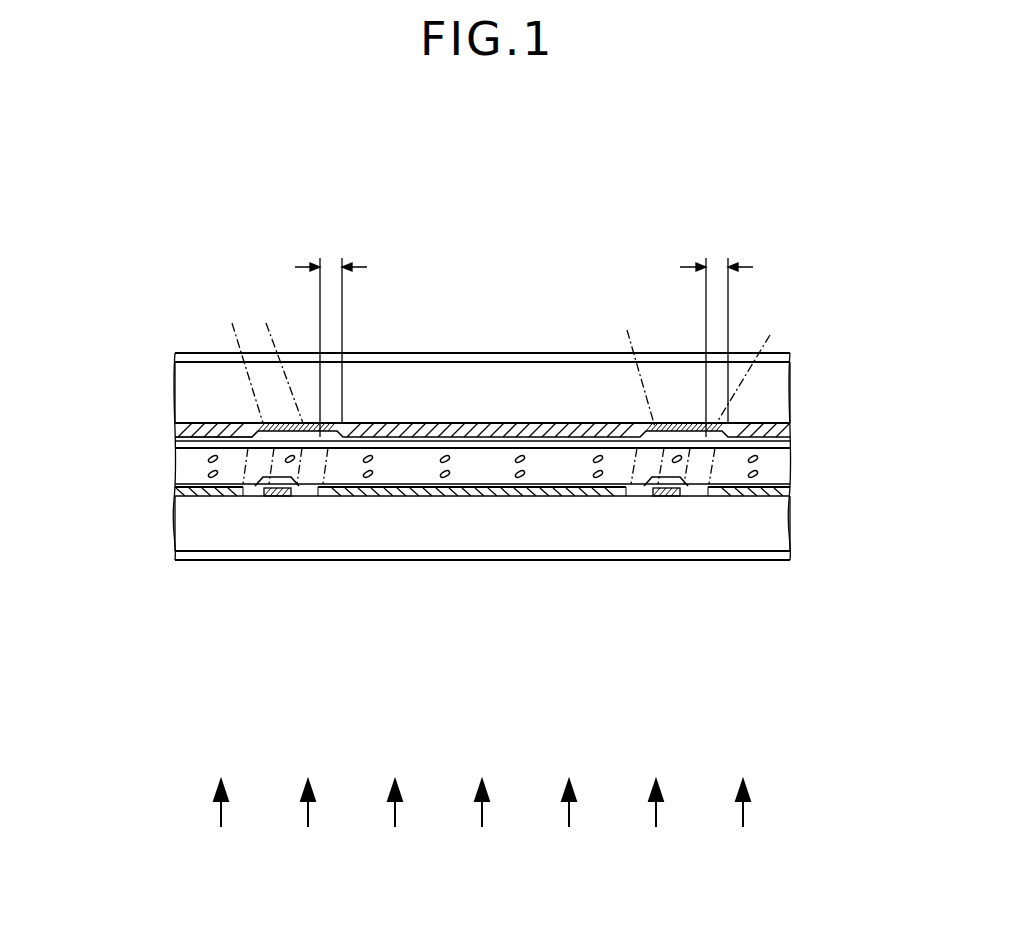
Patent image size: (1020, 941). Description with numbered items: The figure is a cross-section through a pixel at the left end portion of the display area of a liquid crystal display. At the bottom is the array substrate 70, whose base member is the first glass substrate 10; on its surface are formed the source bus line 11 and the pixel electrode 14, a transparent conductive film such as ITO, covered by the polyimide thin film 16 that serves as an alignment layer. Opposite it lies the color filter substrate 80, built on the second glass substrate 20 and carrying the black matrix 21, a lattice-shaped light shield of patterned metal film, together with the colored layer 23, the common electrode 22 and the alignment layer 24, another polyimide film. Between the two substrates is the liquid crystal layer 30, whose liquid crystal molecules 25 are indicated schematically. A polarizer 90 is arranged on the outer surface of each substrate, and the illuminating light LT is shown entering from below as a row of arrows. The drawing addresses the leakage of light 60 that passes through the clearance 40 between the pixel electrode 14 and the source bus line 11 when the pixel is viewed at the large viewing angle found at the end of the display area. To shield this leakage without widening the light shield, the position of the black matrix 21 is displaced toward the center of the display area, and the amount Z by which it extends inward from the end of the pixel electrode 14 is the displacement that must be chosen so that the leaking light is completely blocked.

The polarizer 90 is at (780, 361).
The color filter substrate 80 is at (542, 268).
The second glass substrate 20 is at (455, 380).
The black matrix 21 is at (333, 423).
The colored layer 23 is at (553, 424).
The common electrode 22 is at (175, 436).
The alignment layer 24 is at (175, 443).
The liquid crystal layer 30 is at (542, 469).
The liquid crystal molecule 25 is at (758, 475).
The polyimide thin film 16 is at (175, 484).
The array substrate 70 is at (438, 712).
The pixel electrode 14 is at (472, 497).
The source bus line 11 is at (280, 496).
The first glass substrate 10 is at (387, 555).
The clearance 40 is at (253, 487).
The leakage of light 60 is at (266, 322).
The displacement amount of BM Z is at (335, 262).
The illuminating light LT is at (748, 813).